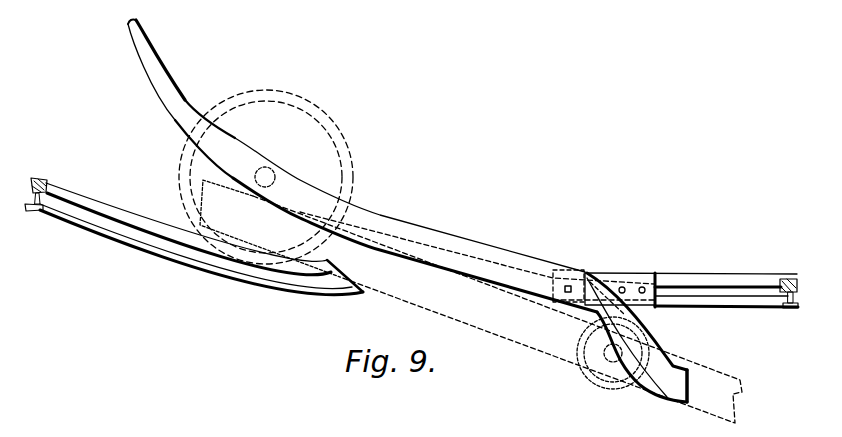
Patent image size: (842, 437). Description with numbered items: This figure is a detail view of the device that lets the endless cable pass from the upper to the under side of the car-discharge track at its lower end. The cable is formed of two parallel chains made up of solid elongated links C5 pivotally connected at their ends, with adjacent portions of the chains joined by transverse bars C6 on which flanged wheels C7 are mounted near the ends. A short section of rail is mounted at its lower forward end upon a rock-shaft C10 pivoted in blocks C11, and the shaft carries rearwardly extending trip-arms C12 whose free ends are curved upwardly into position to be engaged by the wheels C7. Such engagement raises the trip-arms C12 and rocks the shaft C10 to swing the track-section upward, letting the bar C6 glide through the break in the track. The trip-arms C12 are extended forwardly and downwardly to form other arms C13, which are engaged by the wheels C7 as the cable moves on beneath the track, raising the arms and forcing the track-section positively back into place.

The solid elongated link C5 is at (270, 228).
The transverse bar C6 is at (613, 353).
The flanged wheel C7 is at (581, 347).
The rock-shaft C10 is at (570, 286).
The block C11 is at (635, 278).
The trip-arm C12 is at (362, 166).
The arm C13 is at (675, 365).